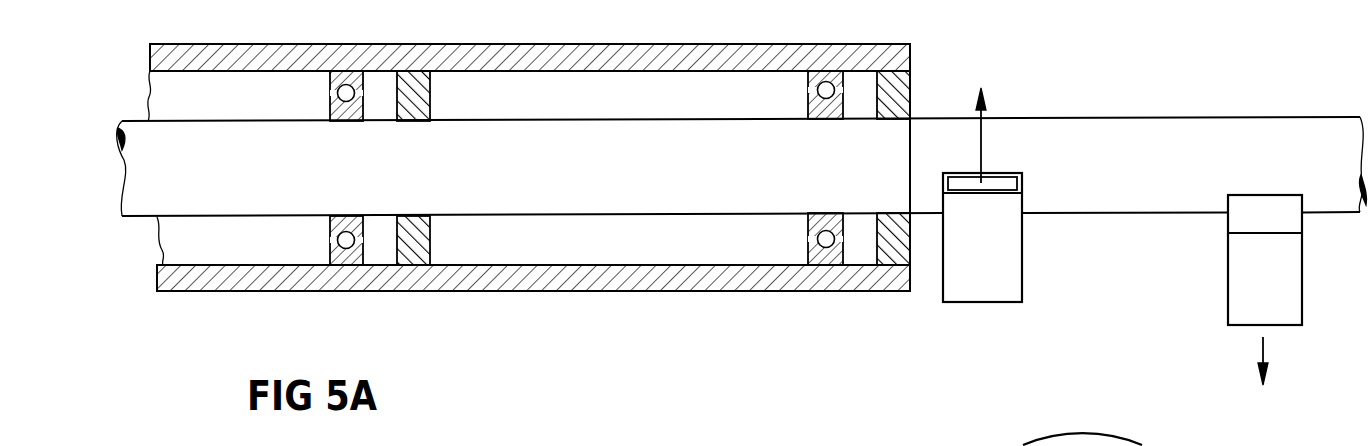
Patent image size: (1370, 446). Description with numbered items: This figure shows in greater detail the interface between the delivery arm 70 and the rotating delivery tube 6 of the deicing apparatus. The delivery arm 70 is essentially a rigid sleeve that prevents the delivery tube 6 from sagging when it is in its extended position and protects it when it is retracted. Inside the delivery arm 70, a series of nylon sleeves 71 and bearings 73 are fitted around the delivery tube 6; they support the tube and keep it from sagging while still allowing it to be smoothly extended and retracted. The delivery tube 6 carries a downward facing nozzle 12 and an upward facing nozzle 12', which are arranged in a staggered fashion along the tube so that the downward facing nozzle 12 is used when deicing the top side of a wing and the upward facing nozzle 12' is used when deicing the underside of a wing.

The delivery tube 6 is at (1126, 138).
The downward facing nozzle 12 is at (1293, 290).
The upward facing nozzle 12' is at (982, 224).
The delivery arm 70 is at (608, 291).
The nylon sleeve 71 is at (412, 248).
The bearing 73 is at (340, 72).